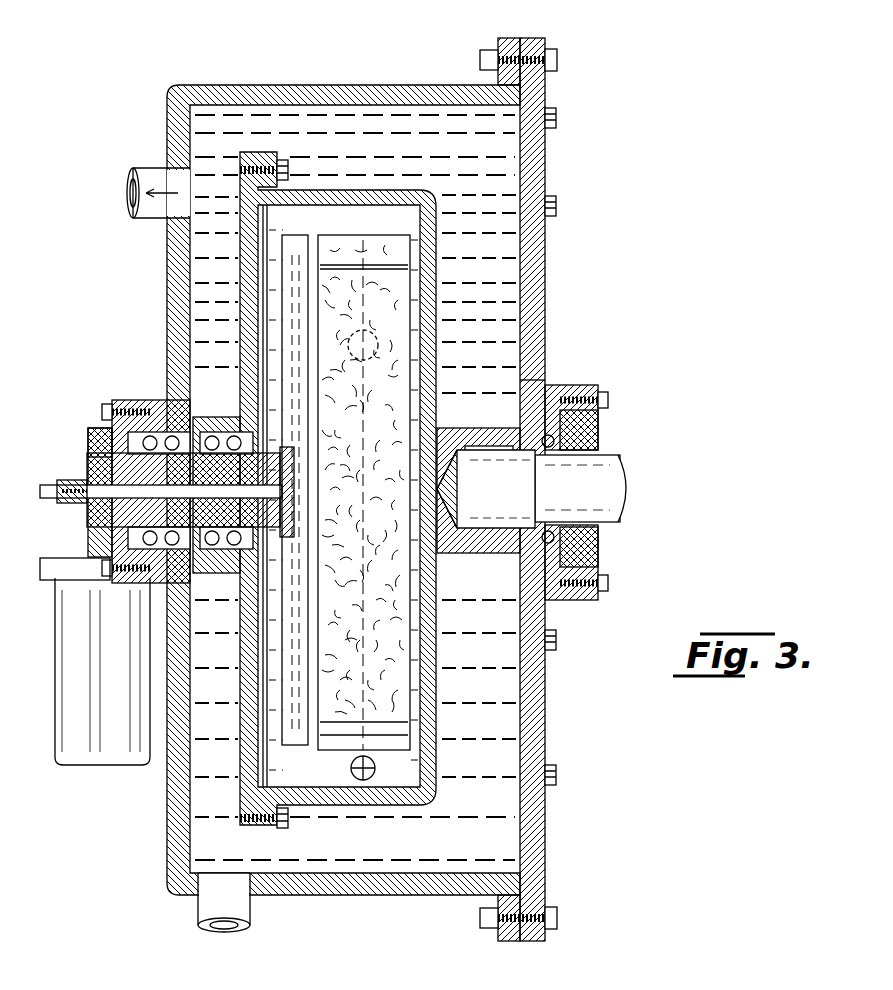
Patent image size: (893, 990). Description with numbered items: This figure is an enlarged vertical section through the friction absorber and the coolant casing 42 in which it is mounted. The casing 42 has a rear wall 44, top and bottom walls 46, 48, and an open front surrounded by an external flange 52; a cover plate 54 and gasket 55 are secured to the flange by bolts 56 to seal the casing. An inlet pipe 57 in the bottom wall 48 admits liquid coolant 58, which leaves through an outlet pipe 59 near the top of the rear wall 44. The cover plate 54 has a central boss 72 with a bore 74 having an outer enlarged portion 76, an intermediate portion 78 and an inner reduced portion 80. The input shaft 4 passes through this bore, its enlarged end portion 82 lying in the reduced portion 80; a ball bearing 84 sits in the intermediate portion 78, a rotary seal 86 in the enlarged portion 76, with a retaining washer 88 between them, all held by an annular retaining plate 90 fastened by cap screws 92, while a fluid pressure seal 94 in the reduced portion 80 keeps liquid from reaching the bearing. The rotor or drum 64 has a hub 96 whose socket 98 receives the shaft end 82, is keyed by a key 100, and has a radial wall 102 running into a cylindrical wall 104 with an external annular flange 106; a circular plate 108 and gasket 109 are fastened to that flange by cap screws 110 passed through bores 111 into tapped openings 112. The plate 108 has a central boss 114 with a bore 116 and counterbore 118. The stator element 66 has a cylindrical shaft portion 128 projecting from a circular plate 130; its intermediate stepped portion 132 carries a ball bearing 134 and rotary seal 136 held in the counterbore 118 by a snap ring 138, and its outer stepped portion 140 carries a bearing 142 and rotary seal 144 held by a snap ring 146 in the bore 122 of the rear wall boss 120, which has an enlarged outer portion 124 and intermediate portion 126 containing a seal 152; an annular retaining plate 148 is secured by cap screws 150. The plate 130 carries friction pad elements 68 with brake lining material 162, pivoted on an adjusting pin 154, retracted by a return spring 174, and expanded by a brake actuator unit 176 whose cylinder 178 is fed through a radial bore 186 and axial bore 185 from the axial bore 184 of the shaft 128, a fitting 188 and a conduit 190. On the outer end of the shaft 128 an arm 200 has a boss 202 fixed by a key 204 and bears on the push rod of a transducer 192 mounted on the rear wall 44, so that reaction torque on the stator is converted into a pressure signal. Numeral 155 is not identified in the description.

The input shaft 4 is at (605, 478).
The coolant-receiving casing 42 is at (556, 167).
The rear wall 44 is at (167, 250).
The top wall 46 is at (352, 86).
The bottom wall 48 is at (322, 896).
The external flange 52 is at (505, 40).
The cover plate 54 is at (548, 725).
The gasket 55 is at (522, 40).
The bolts 56 is at (572, 795).
The inlet pipe 57 is at (206, 918).
The liquid coolant 58 is at (480, 806).
The outlet pipe 59 is at (150, 168).
The drum 64 is at (440, 205).
The stator element 66 is at (315, 221).
The friction pad elements 68 is at (424, 322).
The boss 72 is at (540, 385).
The bore 74 is at (486, 489).
The outer enlarged portion 76 is at (598, 555).
The intermediate portion 78 is at (548, 562).
The inner reduced portion 80 is at (530, 530).
The enlarged end portion 82 is at (470, 552).
The ball bearing 84 is at (558, 515).
The rotary seal 86 is at (598, 530).
The retaining washer 88 is at (560, 398).
The annular retaining plate 90 is at (598, 440).
The cap screws 92 is at (622, 598).
The fluid pressure seal 94 is at (516, 476).
The hub 96 is at (458, 424).
The socket 98 is at (488, 552).
The key 100 is at (490, 446).
The radial wall 102 is at (440, 252).
The cylindrical wall 104 is at (395, 190).
The external annular flange 106 is at (282, 160).
The circular plate 108 is at (240, 213).
The gasket 109 is at (257, 152).
The cap screws 110 is at (310, 818).
The bores 111 is at (288, 842).
The tapped openings 112 is at (240, 822).
The central boss 114 is at (210, 417).
The bore 116 is at (312, 526).
The enlarged counterbore 118 is at (225, 578).
The central boss 120 is at (140, 398).
The bore 122 is at (223, 523).
The enlarged outer portion 124 is at (181, 566).
The intermediate portion 126 is at (217, 456).
The cylindrical shaft portion 128 is at (75, 527).
The circular plate 130 is at (258, 605).
The intermediate stepped portion 132 is at (274, 467).
The ball bearing 134 is at (261, 512).
The rotary seal 136 is at (244, 467).
The snap ring 138 is at (243, 380).
The outer stepped portion 140 is at (183, 490).
The bearing 142 is at (165, 420).
The rotary seal 144 is at (126, 467).
The snap ring 146 is at (116, 578).
The annular retaining plate 148 is at (110, 395).
The cap screws 150 is at (104, 408).
The seal 152 is at (161, 490).
The adjusting pin 154 is at (351, 716).
The filter media 155 is at (394, 540).
The brake lining material 162 is at (398, 416).
The return spring 174 is at (366, 345).
The brake actuator unit 176 is at (396, 234).
The cylinder 178 is at (340, 234).
The axial bore 184 is at (312, 500).
The axial bore 185 is at (300, 475).
The radial bore 186 is at (240, 298).
The fitting 188 is at (78, 478).
The conduit 190 is at (58, 478).
The transducer 192 is at (95, 752).
The arm 200 is at (102, 425).
The boss 202 is at (88, 582).
The key 204 is at (121, 512).